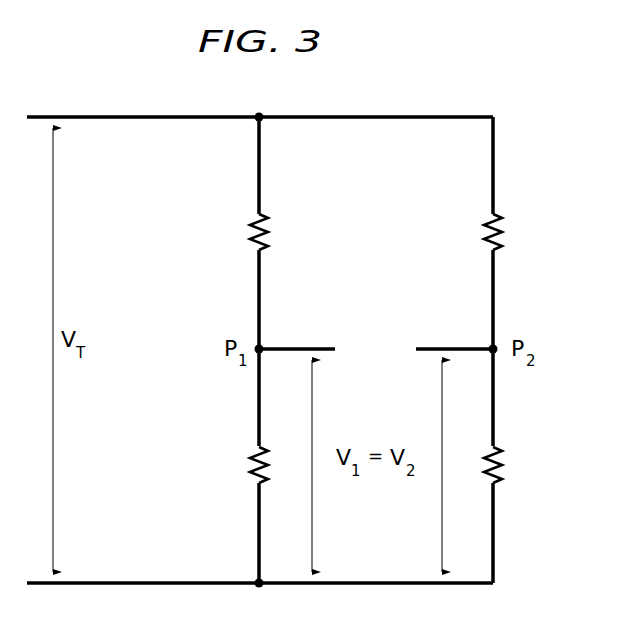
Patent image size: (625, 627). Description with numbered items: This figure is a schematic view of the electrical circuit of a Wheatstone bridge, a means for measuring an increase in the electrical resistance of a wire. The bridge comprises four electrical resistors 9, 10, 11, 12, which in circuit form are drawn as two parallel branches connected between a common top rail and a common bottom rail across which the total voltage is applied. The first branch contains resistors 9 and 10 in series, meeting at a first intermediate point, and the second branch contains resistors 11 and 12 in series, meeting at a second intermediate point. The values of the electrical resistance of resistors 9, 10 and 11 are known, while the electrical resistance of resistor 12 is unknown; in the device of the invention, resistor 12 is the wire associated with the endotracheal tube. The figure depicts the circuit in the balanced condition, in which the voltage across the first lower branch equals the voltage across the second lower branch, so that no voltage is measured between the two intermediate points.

The electrical resistor 9 is at (252, 233).
The electrical resistor 10 is at (252, 467).
The electrical resistor 11 is at (500, 233).
The electrical resistor 12 is at (500, 465).